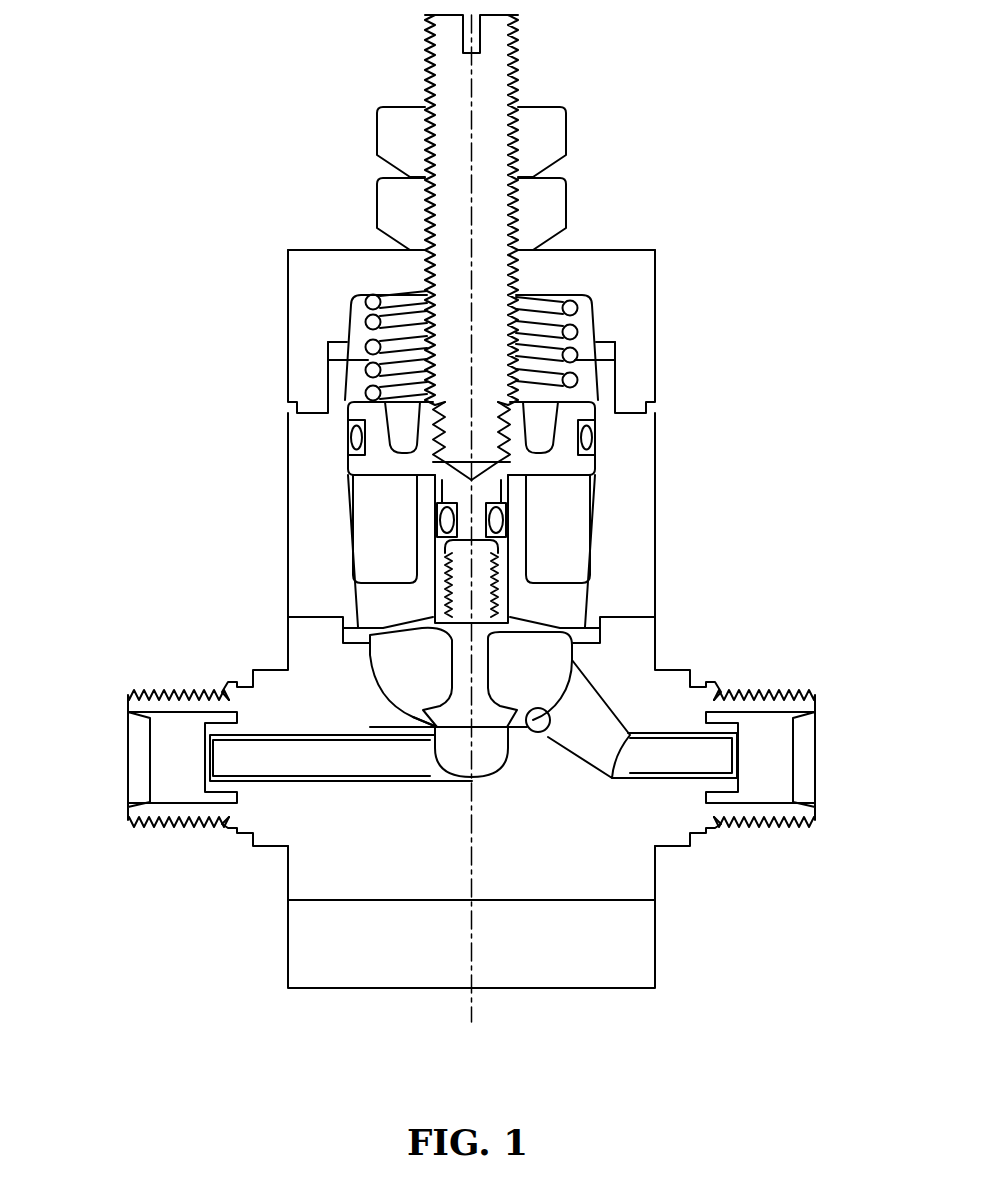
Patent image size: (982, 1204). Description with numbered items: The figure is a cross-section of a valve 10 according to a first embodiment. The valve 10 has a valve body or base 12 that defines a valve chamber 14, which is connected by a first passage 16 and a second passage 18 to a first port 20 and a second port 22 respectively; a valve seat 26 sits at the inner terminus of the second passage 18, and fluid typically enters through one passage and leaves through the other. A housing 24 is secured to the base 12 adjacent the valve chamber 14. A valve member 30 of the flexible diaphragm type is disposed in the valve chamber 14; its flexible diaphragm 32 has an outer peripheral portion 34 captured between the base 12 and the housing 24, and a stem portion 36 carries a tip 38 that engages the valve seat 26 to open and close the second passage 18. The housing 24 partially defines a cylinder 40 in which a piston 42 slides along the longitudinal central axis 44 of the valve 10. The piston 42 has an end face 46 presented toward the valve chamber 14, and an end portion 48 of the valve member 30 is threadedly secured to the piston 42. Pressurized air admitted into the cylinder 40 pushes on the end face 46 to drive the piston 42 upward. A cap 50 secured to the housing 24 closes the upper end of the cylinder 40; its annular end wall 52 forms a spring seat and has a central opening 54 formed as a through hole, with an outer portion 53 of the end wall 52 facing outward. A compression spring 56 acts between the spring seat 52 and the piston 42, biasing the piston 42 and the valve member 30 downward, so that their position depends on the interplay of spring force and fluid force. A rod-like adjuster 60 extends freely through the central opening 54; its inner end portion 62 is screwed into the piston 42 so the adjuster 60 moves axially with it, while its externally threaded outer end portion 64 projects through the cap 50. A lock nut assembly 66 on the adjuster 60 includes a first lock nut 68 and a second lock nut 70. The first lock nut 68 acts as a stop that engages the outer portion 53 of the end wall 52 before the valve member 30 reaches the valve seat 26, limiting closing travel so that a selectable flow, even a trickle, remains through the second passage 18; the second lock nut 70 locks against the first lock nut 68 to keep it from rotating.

The valve 10 is at (319, 991).
The valve body or base 12 is at (284, 884).
The valve chamber 14 is at (543, 650).
The first passage 16 is at (680, 763).
The second passage 18 is at (247, 763).
The first port 20 is at (769, 778).
The second port 22 is at (163, 783).
The housing 24 is at (285, 455).
The valve seat 26 is at (546, 727).
The valve member 30 is at (450, 668).
The flexible diaphragm 32 is at (398, 632).
The outer peripheral portion 34 is at (366, 630).
The stem portion 36 is at (455, 692).
The tip 38 is at (412, 730).
The cylinder 40 is at (572, 539).
The piston 42 is at (597, 465).
The longitudinal central axis 44 is at (476, 152).
The end face 46 is at (548, 472).
The end portion 48 is at (484, 583).
The cap 50 is at (658, 248).
The annular end wall 52 is at (598, 275).
The outer portion 53 is at (502, 288).
The central opening 54 is at (506, 276).
The compression spring 56 is at (580, 330).
The adjuster 60 is at (521, 44).
The inner end portion 62 is at (467, 438).
The outer end portion 64 is at (458, 82).
The lock nut assembly 66 is at (409, 178).
The first lock nut 68 is at (373, 208).
The second lock nut 70 is at (376, 132).